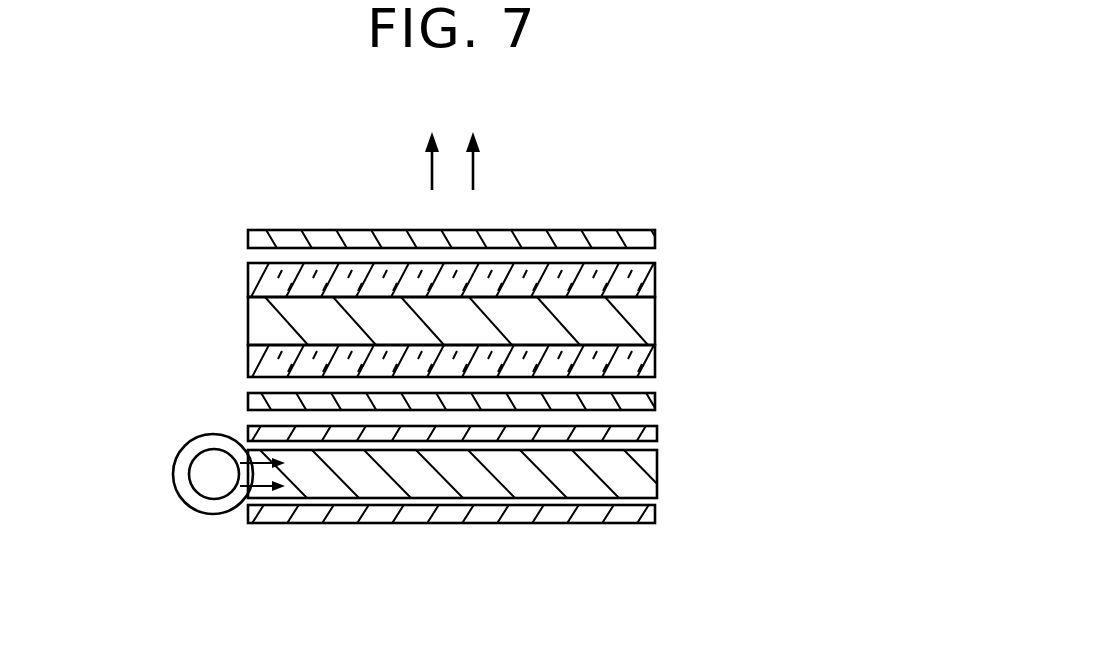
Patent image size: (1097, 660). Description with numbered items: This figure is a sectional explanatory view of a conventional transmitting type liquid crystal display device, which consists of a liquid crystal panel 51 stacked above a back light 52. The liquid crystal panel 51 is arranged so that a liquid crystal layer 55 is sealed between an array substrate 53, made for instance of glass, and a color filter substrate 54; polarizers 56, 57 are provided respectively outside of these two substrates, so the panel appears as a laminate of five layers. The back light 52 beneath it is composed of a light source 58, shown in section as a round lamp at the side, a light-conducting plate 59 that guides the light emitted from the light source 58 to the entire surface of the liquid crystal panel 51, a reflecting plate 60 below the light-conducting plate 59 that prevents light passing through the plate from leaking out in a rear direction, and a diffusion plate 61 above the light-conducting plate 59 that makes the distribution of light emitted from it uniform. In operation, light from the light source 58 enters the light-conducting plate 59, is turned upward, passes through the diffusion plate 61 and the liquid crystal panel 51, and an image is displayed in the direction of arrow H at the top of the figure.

The arrow H is at (477, 171).
The liquid crystal panel 51 is at (432, 269).
The back light 52 is at (404, 533).
The array substrate 53 is at (633, 358).
The color filter substrate 54 is at (635, 285).
The liquid crystal layer 55 is at (638, 317).
The polarizer 56 is at (633, 400).
The polarizer 57 is at (630, 238).
The light source 58 is at (218, 485).
The light-conducting plate 59 is at (380, 485).
The reflecting plate 60 is at (627, 513).
The diffusion plate 61 is at (635, 432).